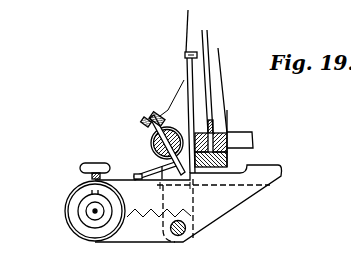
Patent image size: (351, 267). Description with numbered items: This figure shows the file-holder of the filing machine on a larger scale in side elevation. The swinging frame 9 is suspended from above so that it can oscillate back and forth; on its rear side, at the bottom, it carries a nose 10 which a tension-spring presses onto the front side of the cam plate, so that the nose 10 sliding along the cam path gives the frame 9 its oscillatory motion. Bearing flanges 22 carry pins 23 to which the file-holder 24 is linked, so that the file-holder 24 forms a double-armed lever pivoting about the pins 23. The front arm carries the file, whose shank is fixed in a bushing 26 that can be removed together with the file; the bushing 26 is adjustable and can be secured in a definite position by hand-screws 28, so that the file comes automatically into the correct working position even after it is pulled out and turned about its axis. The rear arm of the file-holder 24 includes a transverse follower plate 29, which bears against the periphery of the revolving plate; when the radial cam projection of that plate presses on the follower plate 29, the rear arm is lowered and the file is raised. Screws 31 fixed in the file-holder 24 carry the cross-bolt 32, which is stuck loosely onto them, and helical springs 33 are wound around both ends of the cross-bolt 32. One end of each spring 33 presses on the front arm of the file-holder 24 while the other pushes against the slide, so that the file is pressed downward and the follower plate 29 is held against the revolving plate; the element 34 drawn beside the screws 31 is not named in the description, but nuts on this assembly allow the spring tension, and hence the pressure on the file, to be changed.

The frame 9 is at (218, 72).
The nose 10 is at (250, 136).
The bearing flanges 22 is at (172, 108).
The pins 23 is at (186, 230).
The file-holder 24 is at (155, 182).
The bushing 26 is at (86, 209).
The hand-screws 28 is at (88, 167).
The follower plate 29 is at (258, 165).
The screws 31 is at (150, 116).
The cross-bolt 32 is at (150, 147).
The helical springs 33 is at (185, 93).
The screw 34 is at (141, 124).